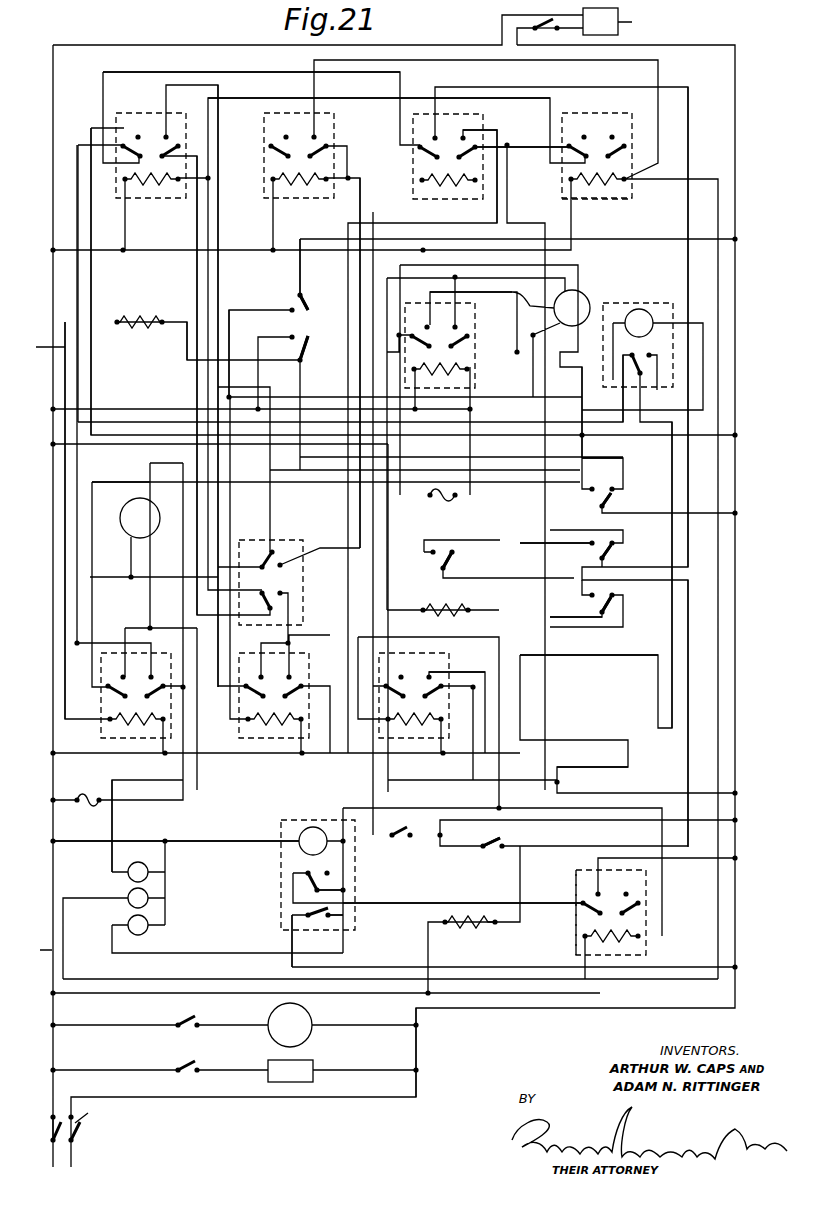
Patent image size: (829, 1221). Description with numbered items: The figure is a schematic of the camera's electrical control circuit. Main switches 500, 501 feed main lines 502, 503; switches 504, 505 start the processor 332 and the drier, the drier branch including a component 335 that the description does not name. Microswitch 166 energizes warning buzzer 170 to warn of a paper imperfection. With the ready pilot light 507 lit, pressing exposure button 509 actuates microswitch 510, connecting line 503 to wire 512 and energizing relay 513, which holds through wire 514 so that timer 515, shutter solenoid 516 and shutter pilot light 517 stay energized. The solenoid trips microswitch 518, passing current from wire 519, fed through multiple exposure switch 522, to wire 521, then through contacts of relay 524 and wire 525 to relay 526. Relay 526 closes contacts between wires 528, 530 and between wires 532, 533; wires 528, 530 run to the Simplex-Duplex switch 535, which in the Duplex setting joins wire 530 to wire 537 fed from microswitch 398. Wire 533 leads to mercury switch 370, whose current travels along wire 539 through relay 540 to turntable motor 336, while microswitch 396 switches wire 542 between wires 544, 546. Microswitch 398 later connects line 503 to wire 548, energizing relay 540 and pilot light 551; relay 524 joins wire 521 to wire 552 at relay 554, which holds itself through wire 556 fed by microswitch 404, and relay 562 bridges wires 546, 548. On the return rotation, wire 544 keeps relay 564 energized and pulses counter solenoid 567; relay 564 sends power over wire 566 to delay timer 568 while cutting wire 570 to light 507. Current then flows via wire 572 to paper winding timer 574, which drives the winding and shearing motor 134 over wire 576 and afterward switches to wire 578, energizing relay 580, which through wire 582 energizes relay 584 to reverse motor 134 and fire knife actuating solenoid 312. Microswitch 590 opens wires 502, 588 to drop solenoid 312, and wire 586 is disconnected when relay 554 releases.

The paper winding and shearing motor 134 is at (125, 512).
The microswitch 166 is at (548, 30).
The warning buzzer 170 is at (621, 21).
The knife actuating solenoid 312 is at (136, 328).
The processor 332 is at (303, 1035).
The rectifier 335 is at (286, 1082).
The turntable motor 336 is at (592, 296).
The mercury switch 370 is at (628, 603).
The microswitch 396 is at (618, 550).
The microswitch 398 is at (590, 497).
The microswitch 404 is at (295, 292).
The main switch 500 is at (52, 1130).
The main switch 501 is at (82, 1135).
The main line 502 is at (604, 1001).
The main line 503 is at (292, 950).
The switch 504 is at (188, 1018).
The switch 505 is at (188, 1063).
The ready pilot light 507 is at (150, 864).
The exposure button 509 is at (295, 915).
The microswitch 510 is at (295, 882).
The wire 512 is at (665, 914).
The relay 513 is at (568, 923).
The wire 514 is at (402, 900).
The timer 515 is at (278, 857).
The shutter solenoid 516 is at (477, 608).
The shutter pilot light 517 is at (128, 920).
The microswitch 518 is at (432, 560).
The wire 519 is at (570, 833).
The wire 521 is at (422, 550).
The multiple exposure switch 522 is at (490, 855).
The relay 524 is at (615, 205).
The wire 525 is at (264, 575).
The relay 526 is at (160, 210).
The wire 528 is at (240, 615).
The wire 530 is at (270, 498).
The wire 532 is at (490, 562).
The wire 533 is at (610, 628).
The Simplex-Duplex switch 535 is at (308, 596).
The wire 537 is at (640, 472).
The wire 539 is at (578, 618).
The relay 540 is at (424, 318).
The wire 542 is at (580, 590).
The wire 544 is at (362, 752).
The wire 546 is at (590, 528).
The wire 548 is at (582, 458).
The pilot light 551 is at (128, 893).
The wire 552 is at (576, 134).
The relay 554 is at (410, 184).
The wire 556 is at (346, 271).
The relay 562 is at (262, 200).
The relay 564 is at (373, 669).
The wire 566 is at (612, 768).
The counter solenoid 567 is at (470, 926).
The delay timer 568 is at (570, 655).
The wire 570 is at (346, 772).
The wire 572 is at (668, 735).
The paper winding timer 574 is at (646, 300).
The wire 576 is at (622, 424).
The wire 578 is at (657, 388).
The relay 580 is at (232, 726).
The wire 582 is at (348, 726).
The relay 584 is at (98, 728).
The wire 586 is at (400, 124).
The wire 588 is at (520, 650).
The microswitch 590 is at (290, 328).